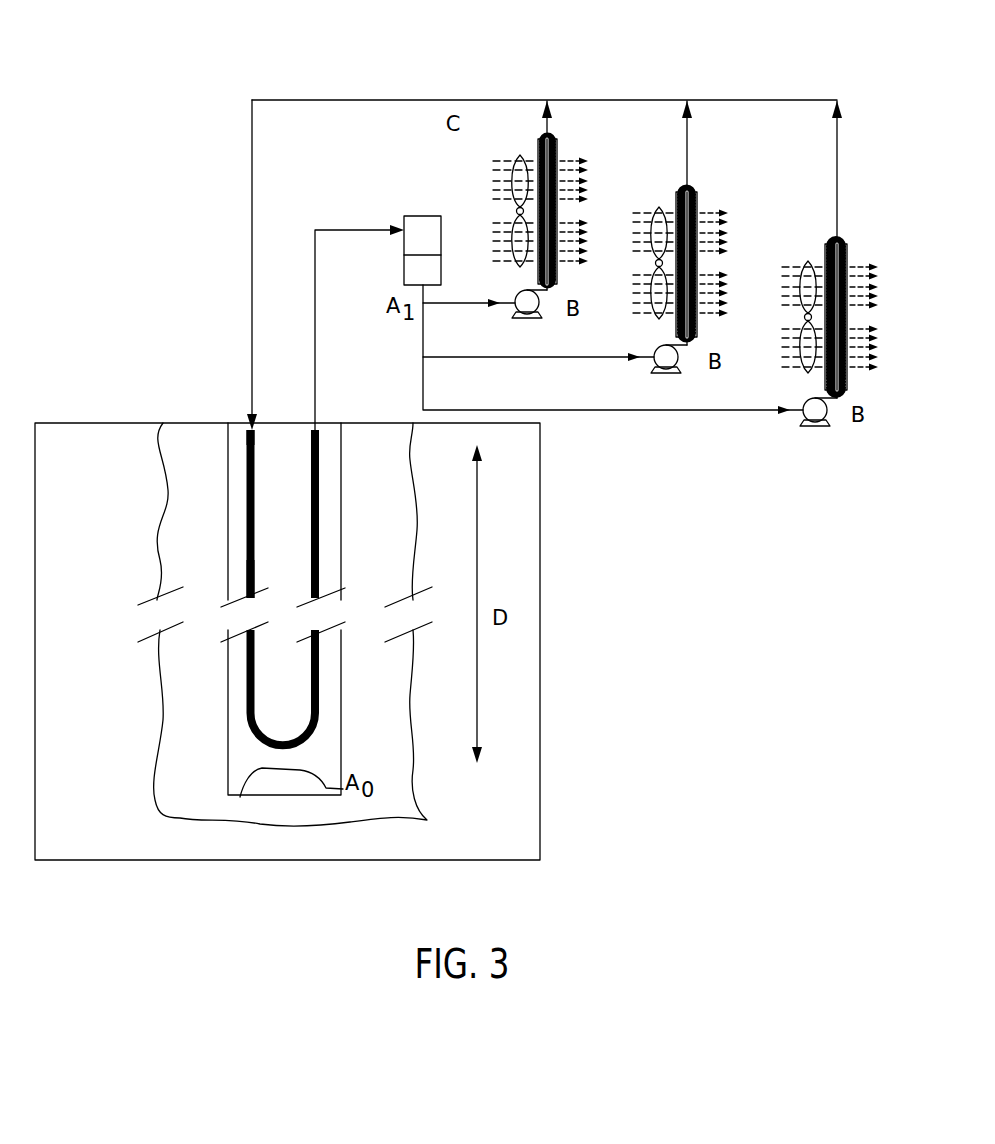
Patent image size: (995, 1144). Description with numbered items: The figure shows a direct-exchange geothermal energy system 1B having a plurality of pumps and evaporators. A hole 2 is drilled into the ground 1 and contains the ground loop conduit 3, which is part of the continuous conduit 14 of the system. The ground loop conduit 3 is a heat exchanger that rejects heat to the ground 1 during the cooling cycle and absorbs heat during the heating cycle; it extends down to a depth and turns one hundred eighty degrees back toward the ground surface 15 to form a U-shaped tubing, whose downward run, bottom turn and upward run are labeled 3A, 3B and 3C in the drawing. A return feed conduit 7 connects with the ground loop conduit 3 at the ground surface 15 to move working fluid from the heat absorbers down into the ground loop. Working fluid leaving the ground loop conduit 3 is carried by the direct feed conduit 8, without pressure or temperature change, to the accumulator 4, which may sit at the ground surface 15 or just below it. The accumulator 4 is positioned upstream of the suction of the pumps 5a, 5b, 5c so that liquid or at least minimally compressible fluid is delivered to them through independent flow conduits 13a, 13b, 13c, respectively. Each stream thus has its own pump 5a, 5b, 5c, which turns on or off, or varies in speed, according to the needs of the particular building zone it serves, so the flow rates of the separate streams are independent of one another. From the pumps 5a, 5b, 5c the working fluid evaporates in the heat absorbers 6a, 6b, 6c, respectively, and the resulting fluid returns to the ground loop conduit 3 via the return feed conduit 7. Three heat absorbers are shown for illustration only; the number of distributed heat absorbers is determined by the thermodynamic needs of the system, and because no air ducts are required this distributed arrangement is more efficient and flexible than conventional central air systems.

The direct geothermal energy system 1B is at (188, 88).
The ground 1 is at (98, 422).
The hole 2 is at (227, 457).
The ground loop conduit 3 is at (313, 566).
The downward leg of pipe 3A is at (248, 583).
The bottom bend of pipe 3B is at (240, 793).
The upward leg of pipe 3C is at (318, 530).
The accumulator 4 is at (403, 213).
The pump 5a is at (529, 317).
The pump 5b is at (669, 371).
The pump 5c is at (818, 425).
The heat absorber 6a is at (540, 195).
The heat absorber 6b is at (680, 223).
The heat absorber 6c is at (830, 249).
The return feed conduit 7 is at (252, 200).
The direct feed conduit 8 is at (337, 230).
The independent flow conduit 13a is at (469, 291).
The independent flow conduit 13b is at (538, 332).
The independent flow conduit 13c is at (613, 385).
The continuous conduit 14 is at (637, 100).
The ground surface 15 is at (240, 430).